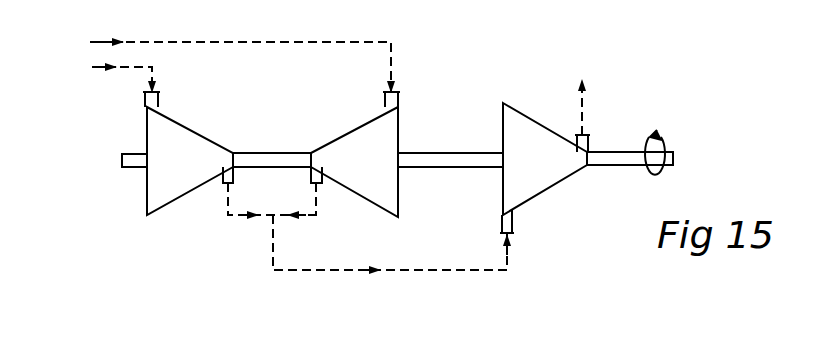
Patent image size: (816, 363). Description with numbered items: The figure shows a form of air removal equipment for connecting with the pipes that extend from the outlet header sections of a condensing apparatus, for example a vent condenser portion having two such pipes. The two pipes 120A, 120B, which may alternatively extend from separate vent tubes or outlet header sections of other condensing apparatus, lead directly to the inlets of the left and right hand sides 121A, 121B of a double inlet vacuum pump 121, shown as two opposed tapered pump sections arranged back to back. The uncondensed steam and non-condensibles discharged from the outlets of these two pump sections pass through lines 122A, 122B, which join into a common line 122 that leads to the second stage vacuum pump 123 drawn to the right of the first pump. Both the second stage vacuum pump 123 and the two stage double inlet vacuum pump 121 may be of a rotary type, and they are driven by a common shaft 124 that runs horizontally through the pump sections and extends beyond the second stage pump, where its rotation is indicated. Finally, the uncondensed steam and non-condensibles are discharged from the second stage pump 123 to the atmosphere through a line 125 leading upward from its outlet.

The pipe 120A is at (134, 70).
The pipe 120B is at (136, 42).
The double inlet vacuum pump 121 is at (230, 148).
The left hand side of double inlet vacuum pump 121A is at (147, 137).
The right hand side of double inlet vacuum pump 121B is at (397, 127).
The common line 122 is at (326, 270).
The line 122A is at (228, 216).
The line 122B is at (316, 215).
The second stage vacuum pump 123 is at (537, 88).
The common shaft 124 is at (614, 165).
The line 125 is at (584, 112).